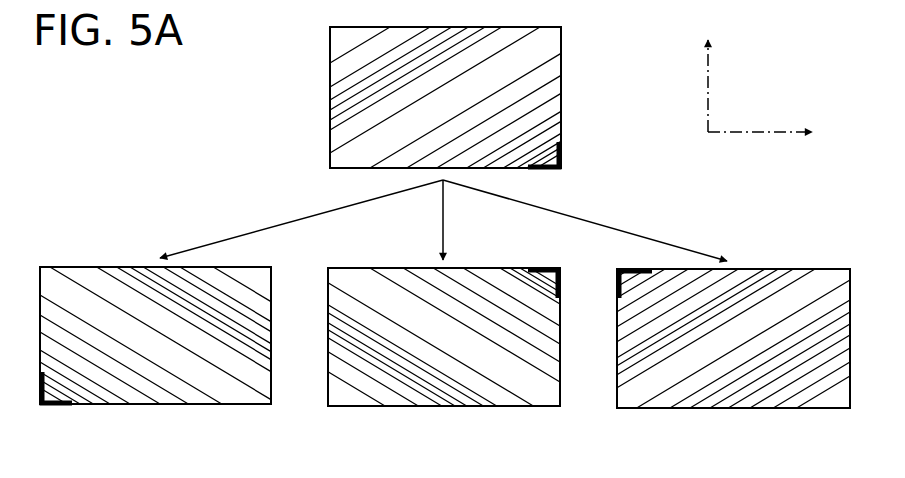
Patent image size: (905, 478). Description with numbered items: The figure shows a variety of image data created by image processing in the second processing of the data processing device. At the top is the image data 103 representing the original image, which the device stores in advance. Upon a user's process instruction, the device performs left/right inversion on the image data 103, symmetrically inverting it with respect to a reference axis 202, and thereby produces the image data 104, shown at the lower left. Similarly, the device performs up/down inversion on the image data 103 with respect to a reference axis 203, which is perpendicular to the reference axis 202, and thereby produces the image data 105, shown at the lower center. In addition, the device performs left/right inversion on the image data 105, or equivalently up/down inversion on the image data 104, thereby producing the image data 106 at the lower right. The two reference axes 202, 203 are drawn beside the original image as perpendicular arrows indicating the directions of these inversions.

The image data 103 is at (561, 70).
The image data 104 is at (79, 267).
The image data 105 is at (395, 268).
The image data 106 is at (812, 269).
The reference axis 202 is at (708, 75).
The reference axis 203 is at (760, 132).